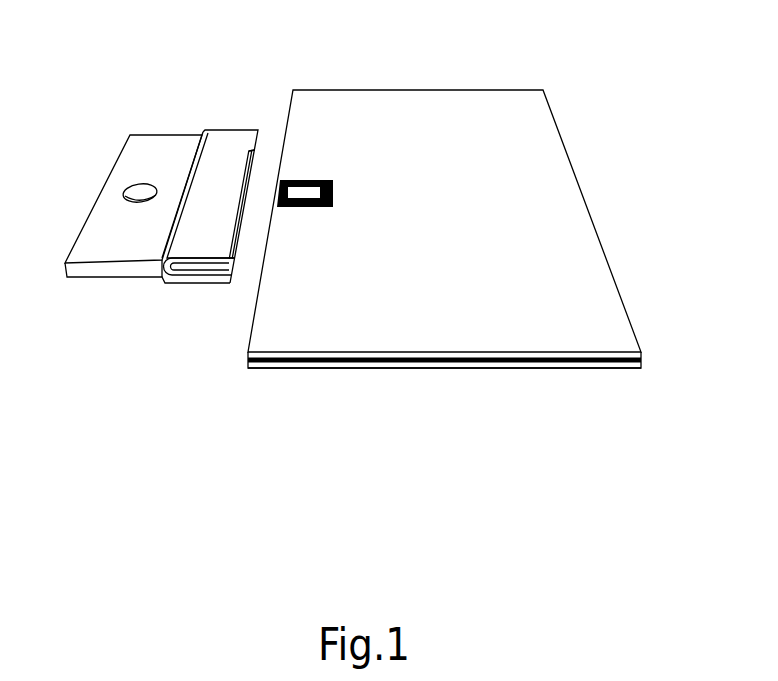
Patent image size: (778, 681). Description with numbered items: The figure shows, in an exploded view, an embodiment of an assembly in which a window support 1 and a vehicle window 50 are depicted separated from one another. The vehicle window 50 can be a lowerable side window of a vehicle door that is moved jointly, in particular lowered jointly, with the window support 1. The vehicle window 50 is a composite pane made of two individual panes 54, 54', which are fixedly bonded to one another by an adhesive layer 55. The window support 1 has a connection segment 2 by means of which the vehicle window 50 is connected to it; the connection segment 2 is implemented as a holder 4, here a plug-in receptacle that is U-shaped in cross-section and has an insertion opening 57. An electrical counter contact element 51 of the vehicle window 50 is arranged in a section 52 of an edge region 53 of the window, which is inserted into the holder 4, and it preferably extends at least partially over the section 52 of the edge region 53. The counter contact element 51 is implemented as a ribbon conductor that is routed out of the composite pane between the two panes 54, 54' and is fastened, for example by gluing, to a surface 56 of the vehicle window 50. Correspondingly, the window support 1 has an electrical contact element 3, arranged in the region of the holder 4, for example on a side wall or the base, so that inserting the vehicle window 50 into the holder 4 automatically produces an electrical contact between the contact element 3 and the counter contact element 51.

The window support 1 is at (158, 163).
The connection segment 2 is at (178, 290).
The electrical contact element 3 is at (246, 207).
The holder 4 is at (215, 280).
The vehicle window 50 is at (480, 173).
The electrical counter contact element 51 is at (308, 188).
The section 52 is at (287, 176).
The edge region 53 is at (303, 121).
The pane 54 is at (422, 396).
The pane 54' is at (443, 400).
The adhesive layer 55 is at (318, 368).
The surface 56 is at (546, 288).
The insertion opening 57 is at (238, 264).